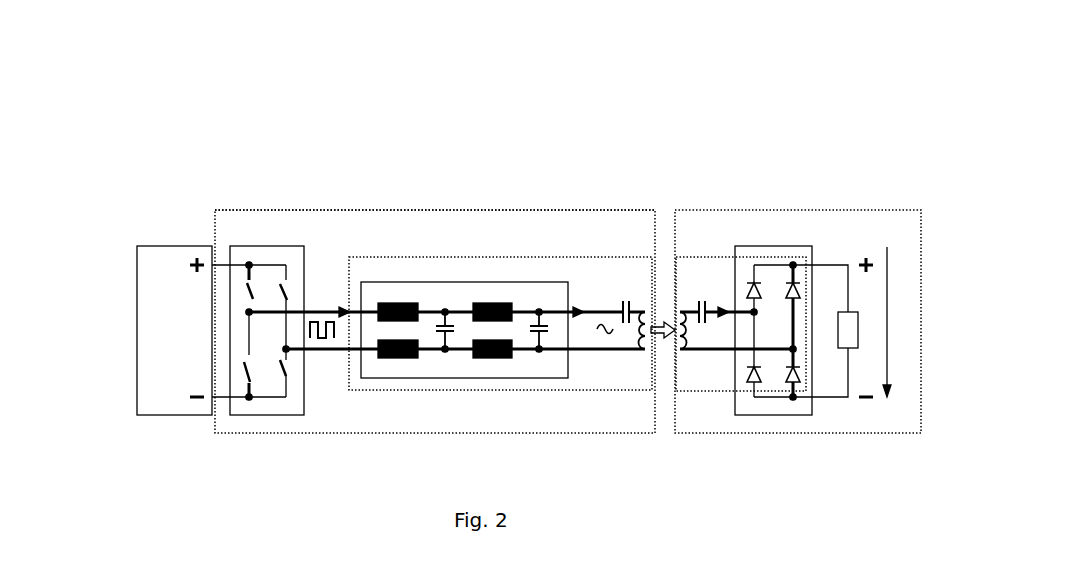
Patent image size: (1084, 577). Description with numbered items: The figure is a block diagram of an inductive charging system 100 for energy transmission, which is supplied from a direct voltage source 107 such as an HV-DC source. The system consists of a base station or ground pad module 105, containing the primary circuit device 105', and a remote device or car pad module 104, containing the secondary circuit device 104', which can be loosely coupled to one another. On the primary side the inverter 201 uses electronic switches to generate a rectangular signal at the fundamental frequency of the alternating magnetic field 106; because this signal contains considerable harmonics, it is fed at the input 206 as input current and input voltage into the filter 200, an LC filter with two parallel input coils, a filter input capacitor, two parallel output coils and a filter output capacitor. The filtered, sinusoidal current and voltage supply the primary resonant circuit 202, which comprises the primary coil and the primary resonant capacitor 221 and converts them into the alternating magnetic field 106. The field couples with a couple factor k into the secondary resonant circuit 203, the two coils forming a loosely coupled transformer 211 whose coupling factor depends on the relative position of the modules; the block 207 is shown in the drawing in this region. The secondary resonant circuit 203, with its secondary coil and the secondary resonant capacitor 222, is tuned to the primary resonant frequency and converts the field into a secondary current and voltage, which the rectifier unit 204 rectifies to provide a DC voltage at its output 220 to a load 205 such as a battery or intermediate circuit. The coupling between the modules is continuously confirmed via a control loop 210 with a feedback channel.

The inductive charging system 100 is at (145, 158).
The direct voltage source 107 is at (137, 237).
The base station 105 is at (426, 275).
The primary circuit device 105' is at (435, 170).
The inverter 201 is at (302, 248).
The input of the filter 206 is at (342, 355).
The filter 200 is at (438, 283).
The control loop 210 is at (458, 392).
The primary series resonant circuit 207 is at (576, 268).
The primary resonant capacitor 221 is at (621, 276).
The primary resonant circuit 202 is at (618, 362).
The alternating magnetic field 106 is at (666, 285).
The loosely coupled transformer 211 is at (666, 285).
The remote device 104 is at (798, 275).
The secondary circuit device 104' is at (741, 260).
The secondary resonant circuit 203 is at (694, 376).
The secondary resonant capacitor 222 is at (701, 276).
The rectifier unit 204 is at (789, 246).
The load 205 is at (858, 328).
The output 220 is at (828, 409).